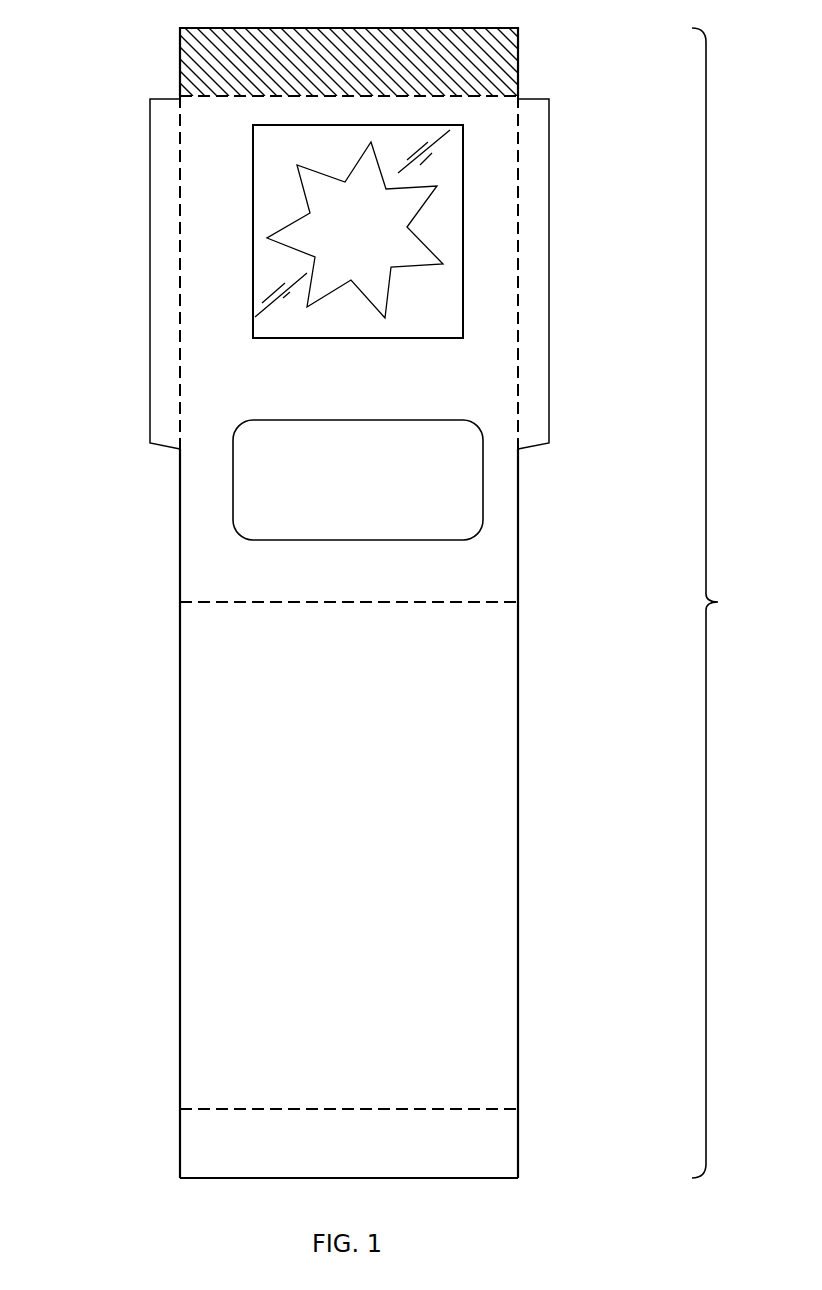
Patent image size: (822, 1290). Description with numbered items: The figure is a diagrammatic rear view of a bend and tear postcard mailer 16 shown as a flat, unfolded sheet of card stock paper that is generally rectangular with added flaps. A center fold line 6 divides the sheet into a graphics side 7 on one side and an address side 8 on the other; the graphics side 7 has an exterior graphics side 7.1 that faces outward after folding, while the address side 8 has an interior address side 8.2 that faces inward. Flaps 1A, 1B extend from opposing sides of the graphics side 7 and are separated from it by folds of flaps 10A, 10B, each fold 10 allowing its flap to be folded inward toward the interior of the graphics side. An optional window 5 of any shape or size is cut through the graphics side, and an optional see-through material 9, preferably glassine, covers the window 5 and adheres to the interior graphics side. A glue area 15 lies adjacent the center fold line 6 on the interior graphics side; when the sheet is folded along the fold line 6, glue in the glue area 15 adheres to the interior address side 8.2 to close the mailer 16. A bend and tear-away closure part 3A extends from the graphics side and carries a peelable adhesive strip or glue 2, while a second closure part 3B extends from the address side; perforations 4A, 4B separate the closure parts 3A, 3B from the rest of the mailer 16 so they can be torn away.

The adhesive strip or glue 2 is at (187, 47).
The bend and tear-away closure part 3A is at (518, 49).
The bend and tear-away closure part 3B is at (497, 1138).
The perforation 4A is at (200, 97).
The perforation 4B is at (215, 1109).
The flap 1A is at (160, 316).
The flap 1B is at (543, 133).
The see-through material 9 is at (253, 195).
The window 5 is at (345, 182).
The fold of flap 10A is at (178, 228).
The fold of flap 10B is at (520, 210).
The fold of flap 10 is at (522, 302).
The exterior graphics side 7.1 is at (512, 289).
The graphics side 7 is at (530, 458).
The glue area 15 is at (374, 497).
The center fold line 6 is at (215, 602).
The interior address side 8.2 is at (332, 860).
The address side 8 is at (540, 950).
The mailer 16 is at (723, 603).